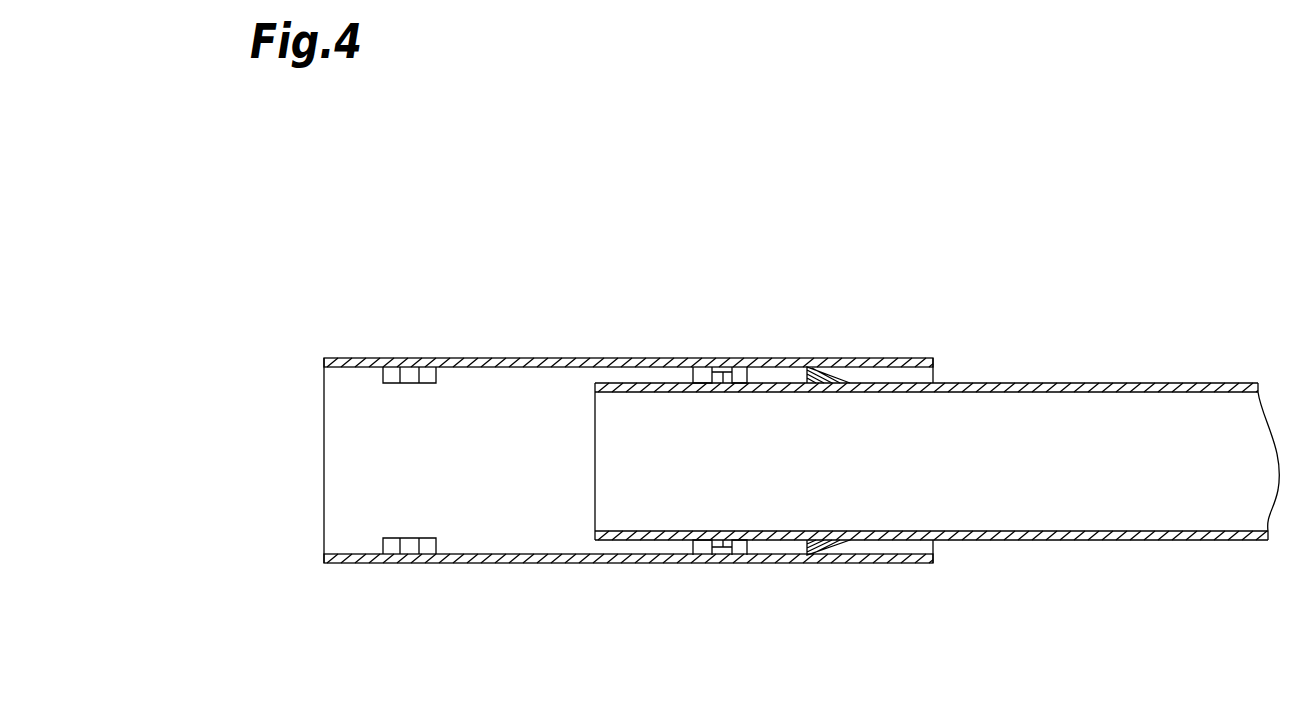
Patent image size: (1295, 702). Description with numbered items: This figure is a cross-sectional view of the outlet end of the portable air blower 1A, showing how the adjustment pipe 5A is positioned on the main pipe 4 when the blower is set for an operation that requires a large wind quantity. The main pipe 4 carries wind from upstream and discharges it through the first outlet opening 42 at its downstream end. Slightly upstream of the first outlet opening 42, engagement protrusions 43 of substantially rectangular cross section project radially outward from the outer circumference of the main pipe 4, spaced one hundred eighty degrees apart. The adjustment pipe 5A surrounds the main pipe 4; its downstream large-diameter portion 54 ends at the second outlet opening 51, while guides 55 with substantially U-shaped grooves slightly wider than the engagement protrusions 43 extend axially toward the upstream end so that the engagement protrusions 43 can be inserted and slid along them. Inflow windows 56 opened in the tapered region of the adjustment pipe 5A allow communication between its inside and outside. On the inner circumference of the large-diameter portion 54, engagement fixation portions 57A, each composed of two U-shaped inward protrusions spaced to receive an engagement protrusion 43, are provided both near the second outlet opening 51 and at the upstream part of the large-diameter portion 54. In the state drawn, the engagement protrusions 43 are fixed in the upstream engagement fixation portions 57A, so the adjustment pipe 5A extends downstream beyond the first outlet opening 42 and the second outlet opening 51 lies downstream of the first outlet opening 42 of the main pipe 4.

The insertion device 1A is at (1121, 209).
The main pipe 4 is at (1215, 540).
The adjustment pipe 5A is at (573, 282).
The first outlet opening 42 is at (611, 530).
The engagement protrusion 43 is at (723, 378).
The second outlet opening 51 is at (324, 553).
The large-diameter portion 54 is at (492, 362).
The guide 55 is at (897, 357).
The inflow window 56 is at (823, 372).
The engagement fixation portion 57A is at (446, 390).